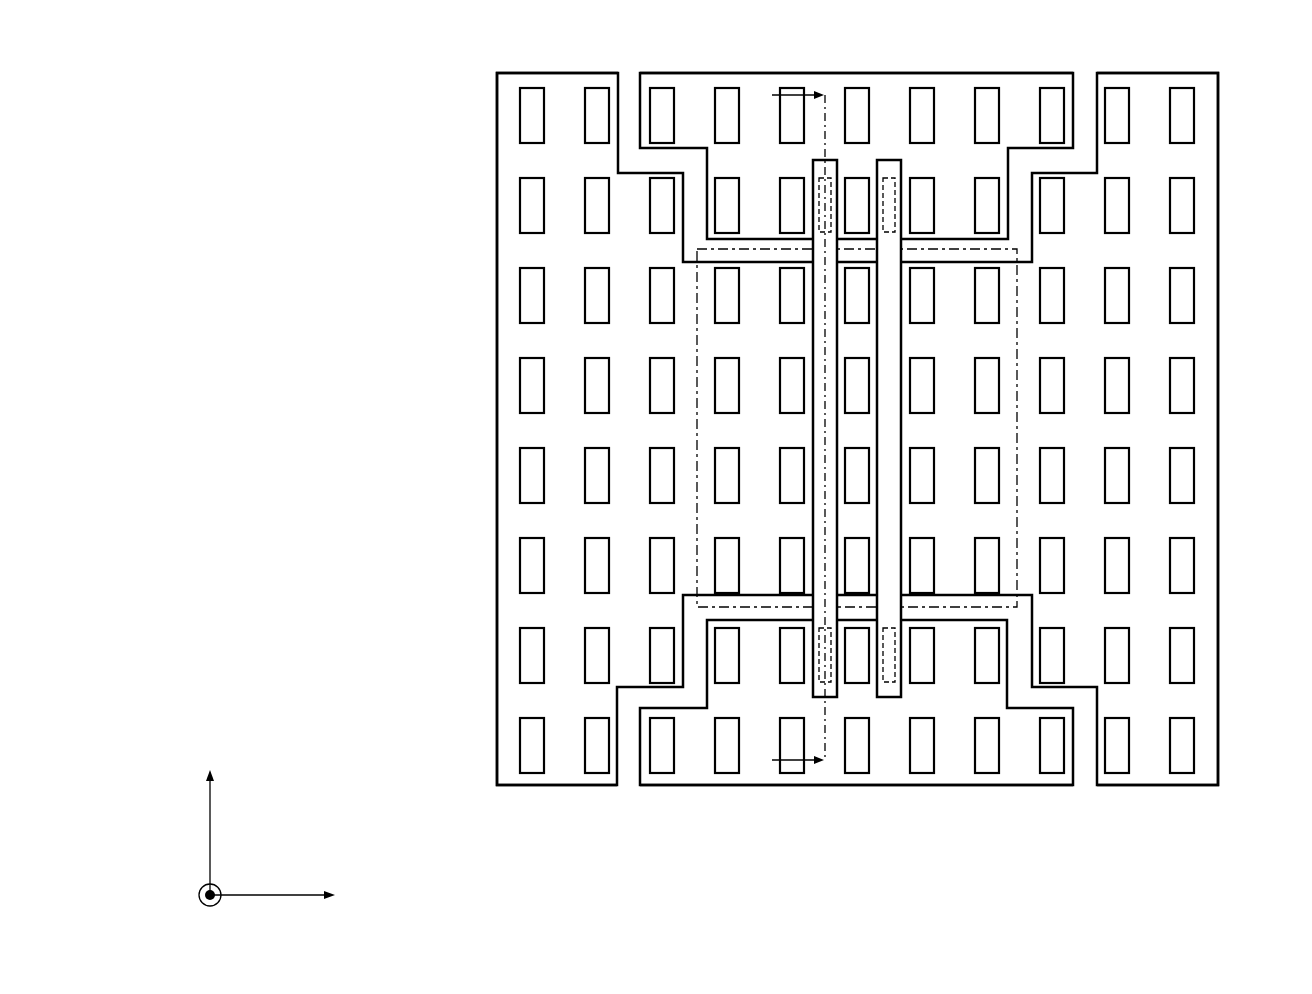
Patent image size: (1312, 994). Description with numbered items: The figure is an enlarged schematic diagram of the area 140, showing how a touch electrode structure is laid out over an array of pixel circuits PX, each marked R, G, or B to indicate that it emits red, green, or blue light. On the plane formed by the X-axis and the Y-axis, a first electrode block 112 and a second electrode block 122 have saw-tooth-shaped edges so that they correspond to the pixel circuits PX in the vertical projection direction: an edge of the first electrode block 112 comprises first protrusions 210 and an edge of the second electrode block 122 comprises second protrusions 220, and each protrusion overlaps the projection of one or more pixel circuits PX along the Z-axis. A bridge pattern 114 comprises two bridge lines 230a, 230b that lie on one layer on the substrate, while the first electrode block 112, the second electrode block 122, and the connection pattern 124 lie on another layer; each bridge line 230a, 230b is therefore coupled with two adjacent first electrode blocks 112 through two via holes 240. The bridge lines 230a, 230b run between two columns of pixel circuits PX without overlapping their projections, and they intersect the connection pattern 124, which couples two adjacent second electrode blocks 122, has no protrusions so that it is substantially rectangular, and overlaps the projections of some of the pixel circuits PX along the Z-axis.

The area 140 is at (287, 112).
The first electrode block 112 is at (1022, 73).
The bridge pattern 114 is at (858, 527).
The second electrode block 122 is at (505, 432).
The connection pattern 124 is at (1007, 608).
The first protrusions 210 is at (706, 239).
The second protrusions 220 is at (683, 688).
The bridge line 230a is at (833, 698).
The bridge line 230b is at (889, 698).
The via holes 240 is at (892, 170).
The pixel circuit PX is at (1180, 88).